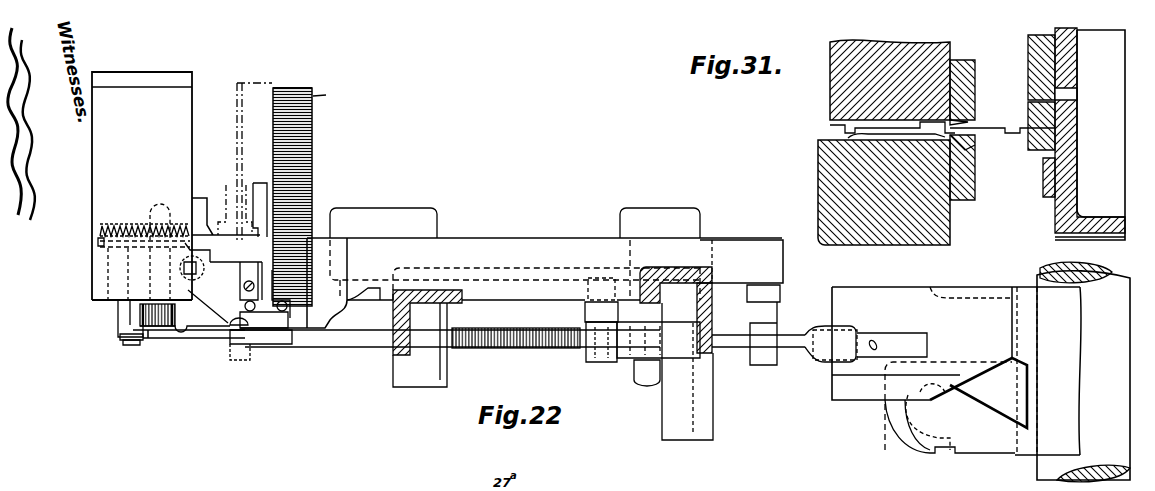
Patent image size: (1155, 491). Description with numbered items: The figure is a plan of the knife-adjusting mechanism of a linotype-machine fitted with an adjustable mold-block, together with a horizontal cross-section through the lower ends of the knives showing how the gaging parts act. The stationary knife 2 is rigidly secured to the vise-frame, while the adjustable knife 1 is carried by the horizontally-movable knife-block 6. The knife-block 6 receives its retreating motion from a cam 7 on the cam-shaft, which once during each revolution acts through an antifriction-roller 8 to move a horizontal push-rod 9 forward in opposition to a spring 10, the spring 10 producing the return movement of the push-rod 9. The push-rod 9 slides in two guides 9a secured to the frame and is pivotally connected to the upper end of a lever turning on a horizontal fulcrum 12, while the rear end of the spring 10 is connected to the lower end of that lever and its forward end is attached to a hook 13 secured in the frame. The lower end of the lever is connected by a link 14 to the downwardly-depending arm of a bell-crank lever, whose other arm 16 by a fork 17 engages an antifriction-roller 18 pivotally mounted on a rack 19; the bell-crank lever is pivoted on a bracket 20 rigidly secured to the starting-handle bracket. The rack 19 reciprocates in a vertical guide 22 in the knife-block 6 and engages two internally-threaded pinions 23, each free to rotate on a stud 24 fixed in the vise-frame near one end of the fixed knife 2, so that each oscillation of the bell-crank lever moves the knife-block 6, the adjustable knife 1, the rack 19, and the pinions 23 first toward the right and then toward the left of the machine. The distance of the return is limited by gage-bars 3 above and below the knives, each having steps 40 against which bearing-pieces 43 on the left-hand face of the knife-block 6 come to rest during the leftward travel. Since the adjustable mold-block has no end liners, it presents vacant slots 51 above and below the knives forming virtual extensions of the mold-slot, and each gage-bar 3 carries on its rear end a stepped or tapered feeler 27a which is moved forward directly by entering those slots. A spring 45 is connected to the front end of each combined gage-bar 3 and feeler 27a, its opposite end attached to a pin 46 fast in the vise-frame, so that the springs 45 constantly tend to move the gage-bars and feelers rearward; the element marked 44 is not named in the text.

In FIG. 22, the adjustable knife 1 is at (192, 268).
In FIG. 31, the adjustable knife 1 is at (971, 167).
In FIG. 22, the stationary knife 2 is at (202, 198).
In FIG. 31, the stationary knife 2 is at (973, 92).
In FIG. 22, the gage-bar 3 is at (103, 274).
In FIG. 22, the knife-block 6 is at (92, 301).
In FIG. 31, the knife-block 6 is at (840, 185).
In FIG. 22, the cam 7 is at (895, 345).
In FIG. 22, the antifriction-roller 8 is at (839, 345).
In FIG. 22, the push-rod 9 is at (733, 348).
In FIG. 22, the guide 9a is at (764, 358).
In FIG. 22, the spring 10 is at (515, 328).
In FIG. 22, the fulcrum 12 is at (640, 375).
In FIG. 22, the hook 13 is at (424, 370).
In FIG. 22, the link 14 is at (336, 347).
In FIG. 22, the arm of bell-crank lever 16 is at (183, 340).
In FIG. 22, the fork 17 is at (151, 340).
In FIG. 22, the antifriction-roller 18 is at (132, 346).
In FIG. 22, the rack 19 is at (133, 315).
In FIG. 22, the bracket 20 is at (223, 284).
In FIG. 22, the vertical guide 22 is at (120, 338).
In FIG. 22, the threaded pinion 23 is at (175, 316).
In FIG. 22, the stud 24 is at (152, 212).
In FIG. 22, the feeler 27a is at (217, 235).
In FIG. 31, the feeler 27a is at (1017, 128).
In FIG. 31, the steps 40 is at (965, 60).
In FIG. 22, the bearing-piece 43 is at (143, 274).
In FIG. 31, the bearing-piece 43 is at (848, 137).
In FIG. 22, the stop 44 is at (98, 242).
In FIG. 22, the spring 45 is at (118, 224).
In FIG. 22, the pin 46 is at (188, 222).
In FIG. 22, the vacant slot 51 is at (254, 210).